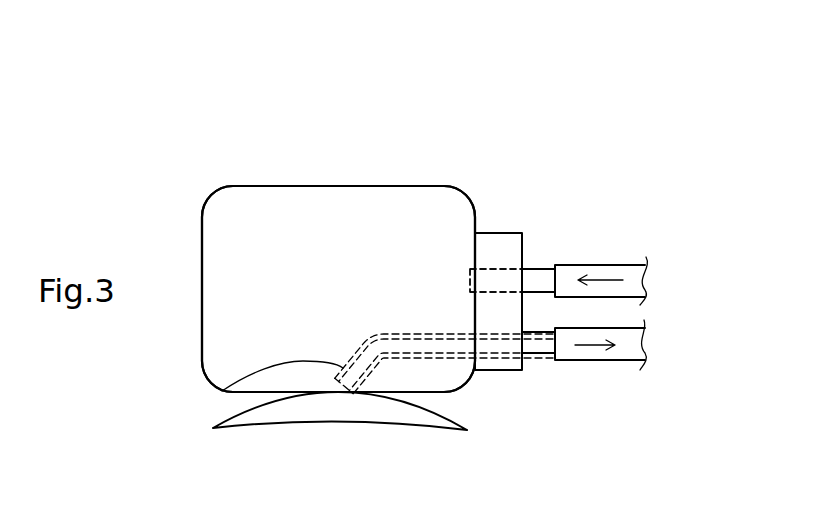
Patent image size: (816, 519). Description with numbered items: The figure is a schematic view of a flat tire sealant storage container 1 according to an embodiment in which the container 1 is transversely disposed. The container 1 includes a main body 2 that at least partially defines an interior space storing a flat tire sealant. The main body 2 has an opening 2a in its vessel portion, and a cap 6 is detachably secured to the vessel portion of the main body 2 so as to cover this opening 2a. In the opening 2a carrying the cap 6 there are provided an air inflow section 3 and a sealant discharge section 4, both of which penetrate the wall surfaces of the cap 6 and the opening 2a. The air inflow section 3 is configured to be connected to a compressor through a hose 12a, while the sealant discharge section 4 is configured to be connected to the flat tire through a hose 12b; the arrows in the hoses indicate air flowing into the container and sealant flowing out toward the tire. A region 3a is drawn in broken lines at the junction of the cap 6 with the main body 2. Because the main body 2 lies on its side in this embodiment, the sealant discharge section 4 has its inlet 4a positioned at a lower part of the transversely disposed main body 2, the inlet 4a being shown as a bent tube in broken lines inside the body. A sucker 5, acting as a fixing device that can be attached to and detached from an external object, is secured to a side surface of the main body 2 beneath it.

The container 1 is at (337, 142).
The main body 2 is at (410, 185).
The opening 2a is at (478, 283).
The air inflow section 3 is at (544, 270).
The pipe opening 3a is at (471, 284).
The sealant discharge section 4 is at (542, 356).
The inlet 4a is at (232, 390).
The sucker 5 is at (418, 429).
The cap 6 is at (526, 238).
The hose 12a is at (612, 268).
The hose 12b is at (610, 355).